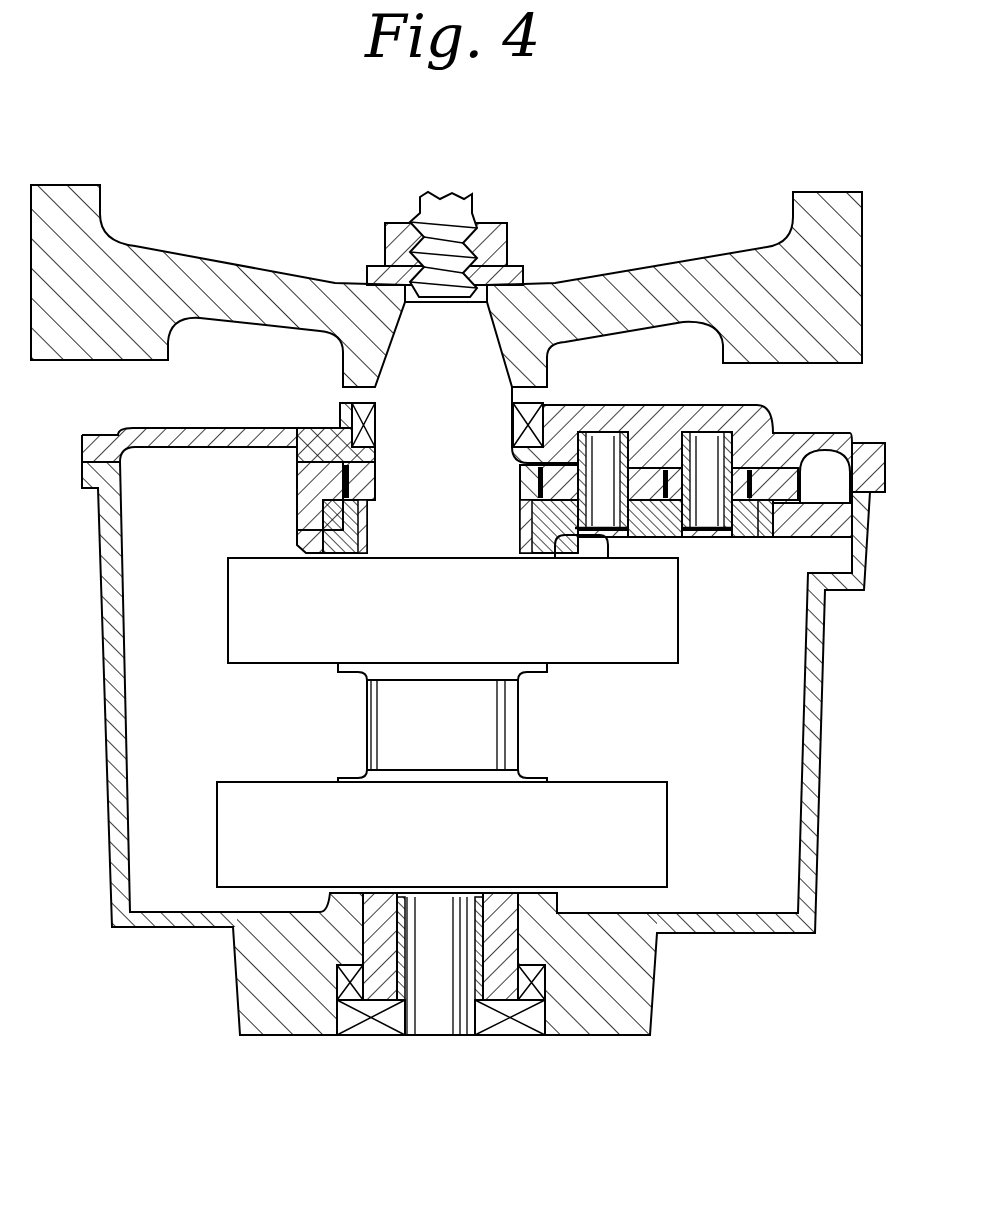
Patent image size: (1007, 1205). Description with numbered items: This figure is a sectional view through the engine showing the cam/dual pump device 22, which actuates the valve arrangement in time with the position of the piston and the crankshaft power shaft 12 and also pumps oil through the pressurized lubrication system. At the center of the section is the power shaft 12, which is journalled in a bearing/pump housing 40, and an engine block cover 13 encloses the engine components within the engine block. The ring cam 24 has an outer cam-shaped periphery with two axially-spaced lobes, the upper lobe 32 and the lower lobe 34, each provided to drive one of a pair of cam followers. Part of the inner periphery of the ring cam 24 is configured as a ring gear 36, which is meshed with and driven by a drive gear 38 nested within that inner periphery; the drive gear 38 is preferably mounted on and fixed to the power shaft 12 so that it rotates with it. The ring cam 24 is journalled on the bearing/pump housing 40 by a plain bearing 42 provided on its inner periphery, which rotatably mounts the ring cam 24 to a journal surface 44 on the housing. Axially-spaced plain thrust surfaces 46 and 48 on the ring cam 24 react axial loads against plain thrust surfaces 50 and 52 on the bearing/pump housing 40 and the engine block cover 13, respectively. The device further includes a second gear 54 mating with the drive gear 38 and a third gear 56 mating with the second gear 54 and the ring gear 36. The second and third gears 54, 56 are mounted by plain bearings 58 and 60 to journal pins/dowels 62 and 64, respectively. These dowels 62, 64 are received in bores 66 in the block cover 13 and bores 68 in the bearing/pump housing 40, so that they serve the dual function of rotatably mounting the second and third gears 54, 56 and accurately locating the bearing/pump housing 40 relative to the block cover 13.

The power shaft 12 is at (423, 633).
The engine block cover 13 is at (852, 431).
The cam/dual pump device 22 is at (294, 487).
The ring cam 24 is at (864, 510).
The upper lobe 32 is at (803, 478).
The lower lobe 34 is at (858, 541).
The ring gear 36 is at (300, 428).
The drive gear 38 is at (338, 442).
The bearing/pump housing 40 is at (327, 542).
The plain bearing 42 is at (775, 538).
The journal surface 44 is at (297, 531).
The plain thrust surface 46 is at (753, 538).
The plain thrust surface 48 is at (780, 467).
The plain thrust surface 50 is at (297, 490).
The plain thrust surface 52 is at (297, 479).
The second gear 54 is at (647, 467).
The third gear 56 is at (749, 470).
The plain bearing 58 is at (593, 452).
The plain bearing 60 is at (706, 440).
The journal pin/dowel 62 is at (593, 507).
The journal pin/dowel 64 is at (697, 507).
The bores 66 is at (585, 466).
The bores 68 is at (606, 547).